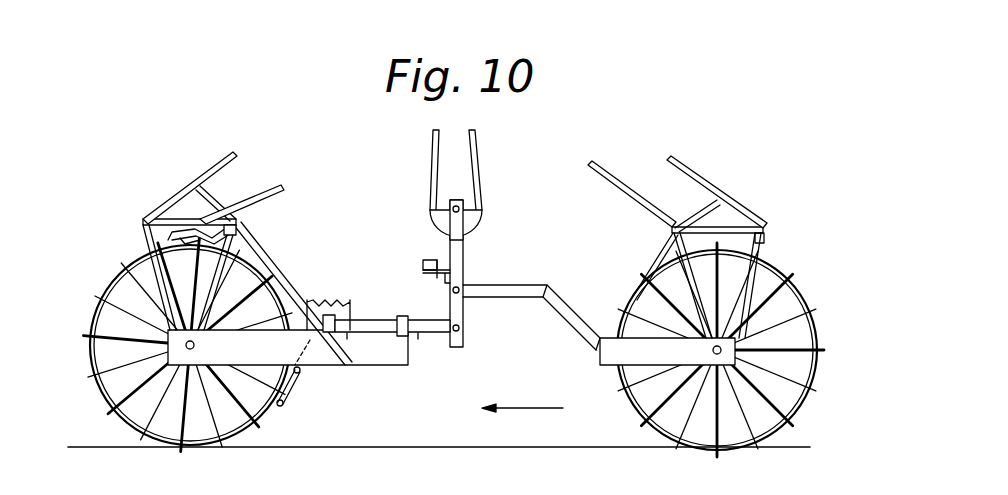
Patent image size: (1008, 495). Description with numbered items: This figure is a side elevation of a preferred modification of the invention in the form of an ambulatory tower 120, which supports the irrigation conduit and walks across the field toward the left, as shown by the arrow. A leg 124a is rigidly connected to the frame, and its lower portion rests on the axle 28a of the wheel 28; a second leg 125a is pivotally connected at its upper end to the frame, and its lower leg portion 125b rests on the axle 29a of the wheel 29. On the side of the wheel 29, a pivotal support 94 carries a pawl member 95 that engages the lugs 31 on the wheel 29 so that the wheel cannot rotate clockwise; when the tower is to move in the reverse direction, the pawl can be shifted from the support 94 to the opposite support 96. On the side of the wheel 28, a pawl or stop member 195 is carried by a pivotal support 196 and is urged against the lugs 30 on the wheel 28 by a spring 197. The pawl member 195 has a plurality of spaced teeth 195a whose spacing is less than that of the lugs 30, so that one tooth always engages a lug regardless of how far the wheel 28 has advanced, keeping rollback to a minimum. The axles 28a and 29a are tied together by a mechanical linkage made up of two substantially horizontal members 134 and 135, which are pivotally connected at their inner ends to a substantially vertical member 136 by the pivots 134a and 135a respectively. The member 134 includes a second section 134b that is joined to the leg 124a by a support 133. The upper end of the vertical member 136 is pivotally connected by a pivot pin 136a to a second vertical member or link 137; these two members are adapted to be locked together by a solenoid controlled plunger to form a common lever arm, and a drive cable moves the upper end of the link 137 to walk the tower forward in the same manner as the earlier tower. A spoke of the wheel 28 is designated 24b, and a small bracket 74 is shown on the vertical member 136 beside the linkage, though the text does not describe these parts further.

The ambulatory tower 120 is at (185, 163).
The leg 124a is at (226, 160).
The spaced teeth 195a is at (192, 231).
The pawl or stop member 195 is at (185, 219).
The spring 197 is at (170, 234).
The pivotal support 196 is at (233, 228).
The lugs 30 is at (117, 263).
The wheel 28 is at (110, 280).
The spoke tine 24b is at (127, 302).
The axle 28a is at (183, 350).
The support 133 is at (268, 273).
The bracket 74 is at (430, 257).
The second vertical member or link 137 is at (482, 172).
The pivot pin 136a is at (460, 212).
The vertical member 136 is at (462, 248).
The pivot 135a is at (463, 290).
The horizontal member 135 is at (513, 297).
The pivot 134a is at (461, 330).
The horizontal member 134 is at (443, 334).
The second section 134b is at (368, 352).
The pivotal support 94 is at (672, 227).
The pawl member 95 is at (673, 237).
The axle 29a is at (710, 350).
The lugs 31 is at (623, 312).
The second leg 125a is at (697, 180).
The opposite support 96 is at (767, 232).
The lower leg portion 125b is at (757, 245).
The wheel 29 is at (793, 410).